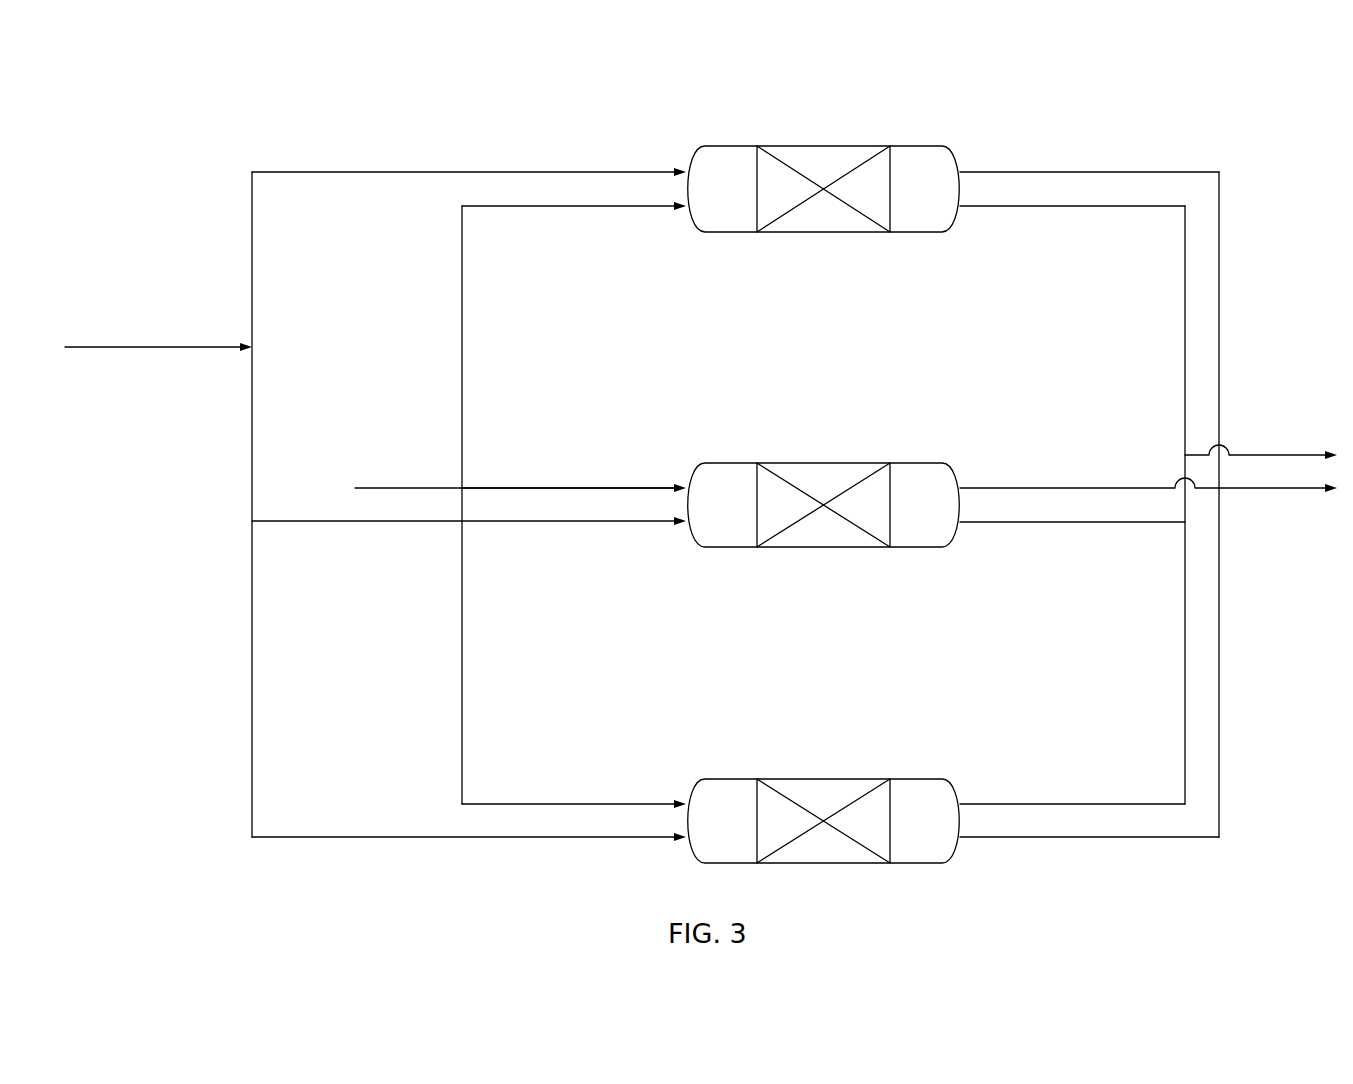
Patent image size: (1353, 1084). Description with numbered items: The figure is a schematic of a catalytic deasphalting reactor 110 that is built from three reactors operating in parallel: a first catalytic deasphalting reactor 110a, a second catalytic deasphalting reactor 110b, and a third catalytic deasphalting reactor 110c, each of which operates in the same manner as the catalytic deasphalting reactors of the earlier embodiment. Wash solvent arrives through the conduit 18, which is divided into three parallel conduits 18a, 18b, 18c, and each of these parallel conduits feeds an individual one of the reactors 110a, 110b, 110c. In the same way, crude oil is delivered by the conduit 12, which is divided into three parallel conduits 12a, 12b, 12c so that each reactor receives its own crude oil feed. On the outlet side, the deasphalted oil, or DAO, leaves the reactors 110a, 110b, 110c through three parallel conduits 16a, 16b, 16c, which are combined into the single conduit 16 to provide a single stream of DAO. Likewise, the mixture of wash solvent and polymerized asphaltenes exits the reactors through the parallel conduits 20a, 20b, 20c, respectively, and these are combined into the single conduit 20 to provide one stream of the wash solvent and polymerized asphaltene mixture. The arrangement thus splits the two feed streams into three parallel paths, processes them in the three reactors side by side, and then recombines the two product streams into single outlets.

The catalytic deasphalting reactor 110 is at (148, 141).
The first catalytic deasphalting reactor 110a is at (823, 146).
The second catalytic deasphalting reactor 110b is at (823, 463).
The third catalytic deasphalting reactor 110c is at (823, 779).
The conduit 18 is at (155, 347).
The parallel conduit 18a is at (405, 172).
The parallel conduit 18b is at (405, 522).
The parallel conduit 18c is at (405, 837).
The conduit 12 is at (405, 488).
The parallel conduit 12a is at (563, 206).
The parallel conduit 12b is at (565, 488).
The parallel conduit 12c is at (565, 804).
The conduit 16 is at (1265, 488).
The parallel conduit 16a is at (1068, 172).
The parallel conduit 16b is at (1068, 488).
The parallel conduit 16c is at (1068, 837).
The conduit 20 is at (1265, 455).
The parallel conduit 20a is at (1068, 206).
The parallel conduit 20b is at (1068, 522).
The parallel conduit 20c is at (1068, 804).